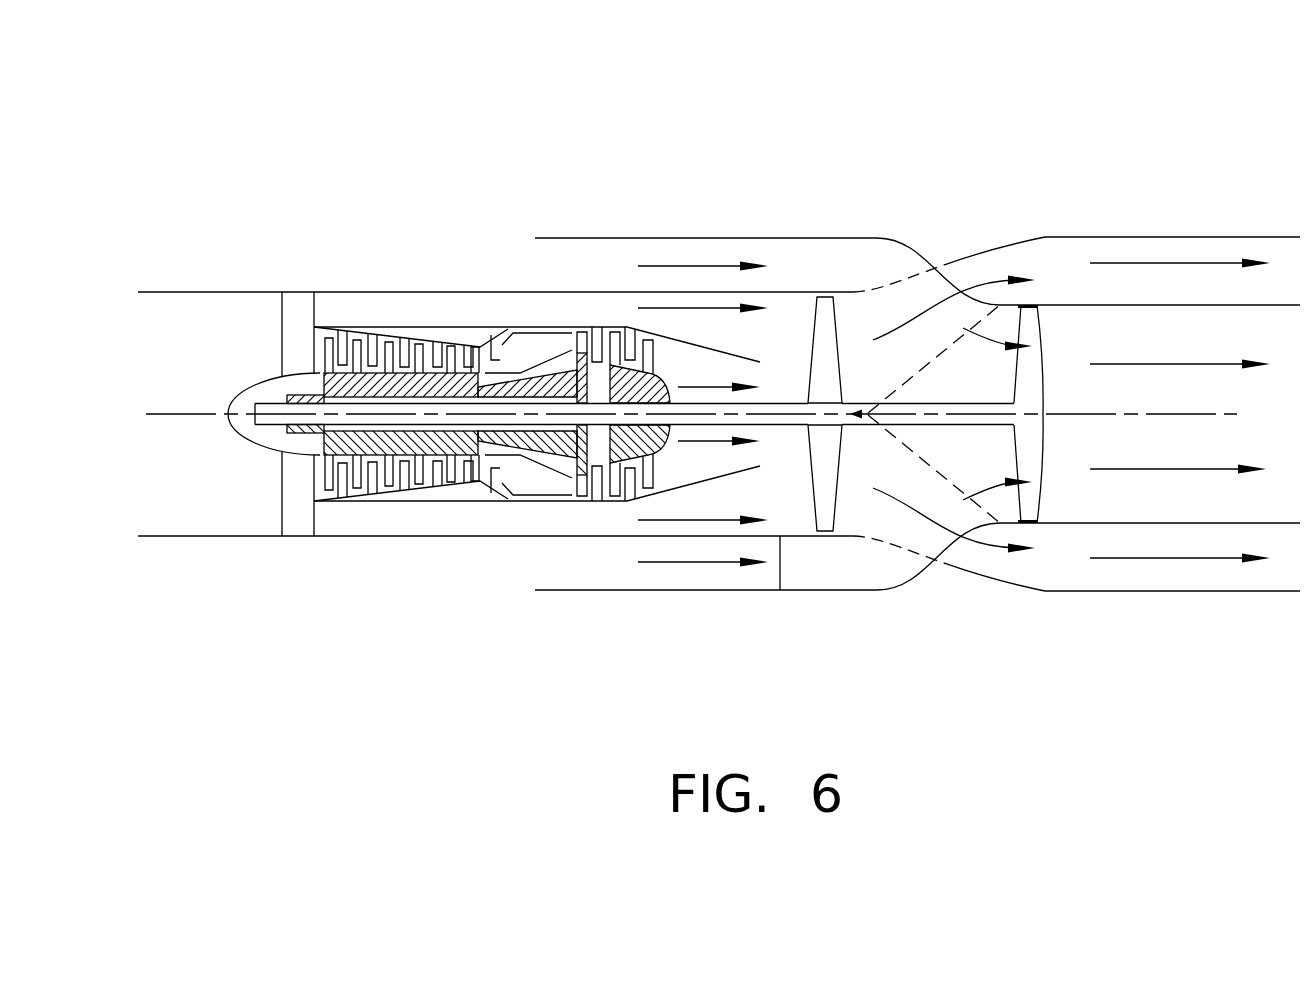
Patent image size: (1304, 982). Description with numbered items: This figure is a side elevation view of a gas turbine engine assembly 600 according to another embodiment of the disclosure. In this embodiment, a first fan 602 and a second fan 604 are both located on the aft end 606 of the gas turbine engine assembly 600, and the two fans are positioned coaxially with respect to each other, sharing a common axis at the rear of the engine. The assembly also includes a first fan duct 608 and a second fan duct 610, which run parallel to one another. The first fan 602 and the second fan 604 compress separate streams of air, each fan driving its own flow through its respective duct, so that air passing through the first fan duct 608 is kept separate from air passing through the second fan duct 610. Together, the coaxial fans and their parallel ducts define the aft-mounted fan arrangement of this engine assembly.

The gas turbine engine assembly 600 is at (672, 112).
The first fan 602 is at (825, 308).
The second fan 604 is at (1033, 318).
The aft end 606 is at (950, 603).
The first fan duct 608 is at (548, 318).
The second fan duct 610 is at (790, 255).